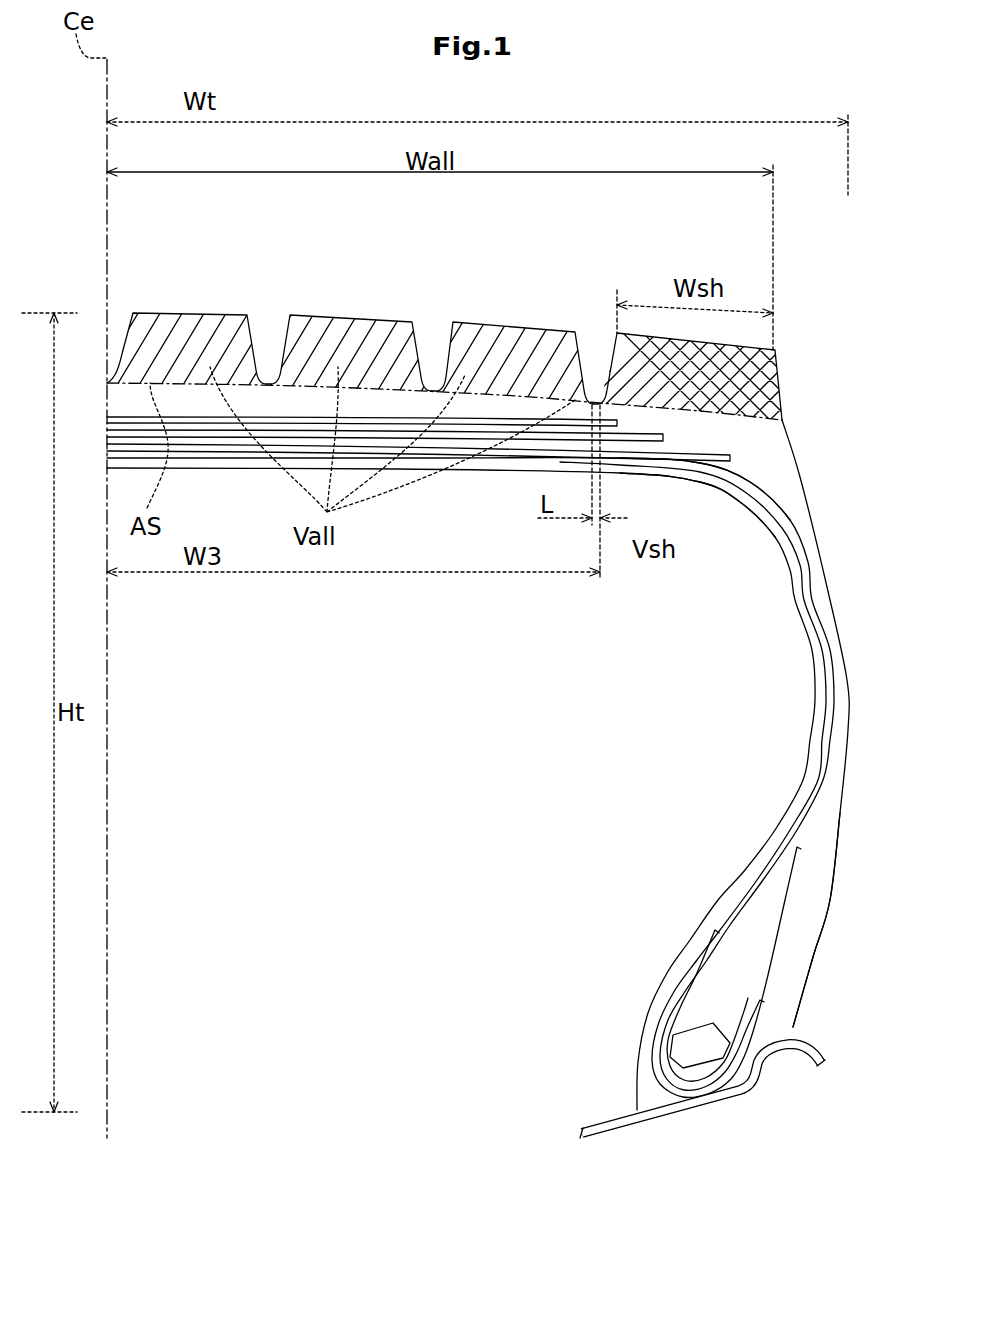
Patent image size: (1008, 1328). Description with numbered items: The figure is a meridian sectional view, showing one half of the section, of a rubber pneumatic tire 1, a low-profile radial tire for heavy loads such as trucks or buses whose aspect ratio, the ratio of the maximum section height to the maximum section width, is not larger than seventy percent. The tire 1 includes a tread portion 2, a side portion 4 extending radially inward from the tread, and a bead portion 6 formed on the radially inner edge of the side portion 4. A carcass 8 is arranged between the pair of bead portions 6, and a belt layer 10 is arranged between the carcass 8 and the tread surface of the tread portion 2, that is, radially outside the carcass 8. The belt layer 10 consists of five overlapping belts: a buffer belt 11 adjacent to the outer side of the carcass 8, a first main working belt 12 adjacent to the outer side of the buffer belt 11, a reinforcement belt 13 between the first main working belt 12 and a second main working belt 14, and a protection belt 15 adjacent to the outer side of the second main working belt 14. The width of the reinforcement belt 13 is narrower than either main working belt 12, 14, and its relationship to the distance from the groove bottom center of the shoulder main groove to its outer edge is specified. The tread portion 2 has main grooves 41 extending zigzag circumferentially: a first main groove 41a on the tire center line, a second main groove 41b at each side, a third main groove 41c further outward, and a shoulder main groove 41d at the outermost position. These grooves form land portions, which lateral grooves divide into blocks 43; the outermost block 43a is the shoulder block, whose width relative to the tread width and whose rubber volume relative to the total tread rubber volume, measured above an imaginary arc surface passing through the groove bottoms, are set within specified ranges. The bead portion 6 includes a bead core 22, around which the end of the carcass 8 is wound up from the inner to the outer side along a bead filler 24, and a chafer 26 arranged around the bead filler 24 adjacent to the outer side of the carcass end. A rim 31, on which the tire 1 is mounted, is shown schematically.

The tire 1 is at (783, 275).
The tread portion 2 is at (605, 385).
The side portion 4 is at (845, 682).
The bead portion 6 is at (807, 935).
The carcass 8 is at (763, 530).
The belt layer 10 is at (858, 540).
The buffer belt 11 is at (757, 490).
The first main working belt 12 is at (740, 457).
The reinforcement belt 13 is at (732, 463).
The second main working belt 14 is at (710, 447).
The protection belt 15 is at (667, 435).
The bead core 22 is at (687, 1035).
The bead filler 24 is at (707, 990).
The chafer 26 is at (650, 1067).
The rim 31 is at (717, 1107).
The main grooves 41 is at (592, 232).
The first main groove 41a is at (110, 330).
The second main groove 41b is at (272, 313).
The third main groove 41c is at (447, 323).
The shoulder main groove 41d is at (582, 330).
The block 43 is at (362, 315).
The shoulder block 43a is at (773, 347).